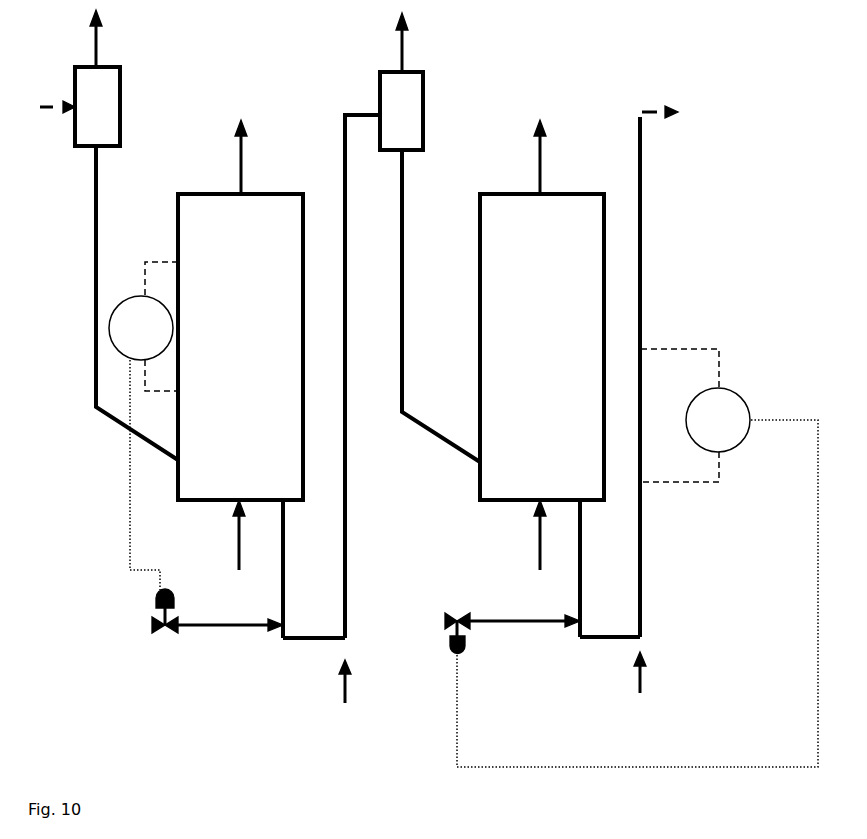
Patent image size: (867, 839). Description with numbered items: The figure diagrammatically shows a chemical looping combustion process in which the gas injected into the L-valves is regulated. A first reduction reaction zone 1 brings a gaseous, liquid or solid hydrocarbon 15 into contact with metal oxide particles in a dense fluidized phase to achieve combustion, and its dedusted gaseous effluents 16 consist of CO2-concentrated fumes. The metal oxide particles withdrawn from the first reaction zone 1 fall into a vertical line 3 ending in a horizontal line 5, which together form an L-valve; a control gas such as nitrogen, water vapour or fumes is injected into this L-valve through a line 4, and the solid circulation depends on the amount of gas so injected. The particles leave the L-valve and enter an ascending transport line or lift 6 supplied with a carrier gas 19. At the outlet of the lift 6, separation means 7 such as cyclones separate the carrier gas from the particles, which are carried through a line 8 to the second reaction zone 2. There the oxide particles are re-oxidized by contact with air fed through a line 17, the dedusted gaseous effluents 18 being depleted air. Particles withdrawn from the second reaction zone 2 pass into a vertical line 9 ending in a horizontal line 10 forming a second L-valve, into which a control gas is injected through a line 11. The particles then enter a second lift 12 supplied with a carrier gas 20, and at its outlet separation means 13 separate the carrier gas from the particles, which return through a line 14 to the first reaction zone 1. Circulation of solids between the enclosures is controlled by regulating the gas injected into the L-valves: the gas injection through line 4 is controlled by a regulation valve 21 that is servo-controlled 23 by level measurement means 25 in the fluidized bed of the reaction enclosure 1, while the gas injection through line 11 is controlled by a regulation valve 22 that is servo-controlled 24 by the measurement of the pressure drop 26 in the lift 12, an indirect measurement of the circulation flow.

The first reduction reaction zone 1 is at (240, 347).
The second reaction zone 2 is at (542, 347).
The vertical line 3 is at (284, 547).
The line 4 is at (254, 625).
The horizontal line 5 is at (305, 640).
The ascending transport line (lift) 6 is at (362, 518).
The separation means 7 is at (401, 81).
The line 8 is at (405, 305).
The vertical line 9 is at (580, 565).
The horizontal line 10 is at (607, 640).
The line 11 is at (549, 625).
The ascending transport line (lift) 12 is at (641, 510).
The separation means 13 is at (80, 78).
The line 14 is at (96, 302).
The hydrocarbon 15 is at (235, 560).
The gaseous effluents 16 is at (239, 180).
The line 17 is at (535, 540).
The gaseous effluents 18 is at (540, 180).
The carrier gas 19 is at (344, 705).
The carrier gas 20 is at (637, 685).
The regulation valve 21 is at (165, 633).
The regulation valve 22 is at (448, 622).
The servo-control 23 is at (128, 525).
The servo-control 24 is at (453, 693).
The level measurement means 25 is at (133, 295).
The pressure drop measurement 26 is at (745, 437).